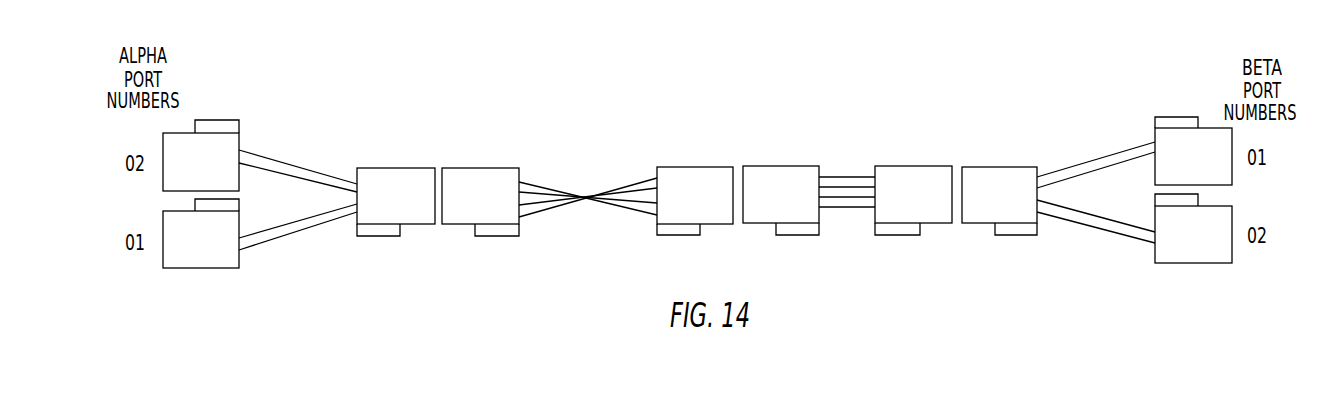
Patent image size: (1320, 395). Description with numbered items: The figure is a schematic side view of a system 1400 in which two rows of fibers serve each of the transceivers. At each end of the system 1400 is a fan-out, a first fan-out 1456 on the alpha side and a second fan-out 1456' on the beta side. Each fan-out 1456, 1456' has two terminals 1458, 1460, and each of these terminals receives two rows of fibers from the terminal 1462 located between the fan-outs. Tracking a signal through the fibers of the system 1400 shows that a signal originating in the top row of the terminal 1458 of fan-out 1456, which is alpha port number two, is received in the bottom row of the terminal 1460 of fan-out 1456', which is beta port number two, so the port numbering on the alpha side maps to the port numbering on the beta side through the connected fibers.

The system 1400 is at (737, 127).
The fan-out 1456 is at (328, 176).
The fan-out 1456' is at (1079, 178).
The terminal 1458 is at (183, 142).
The terminal 1460 is at (220, 260).
The terminal 1462 is at (393, 178).